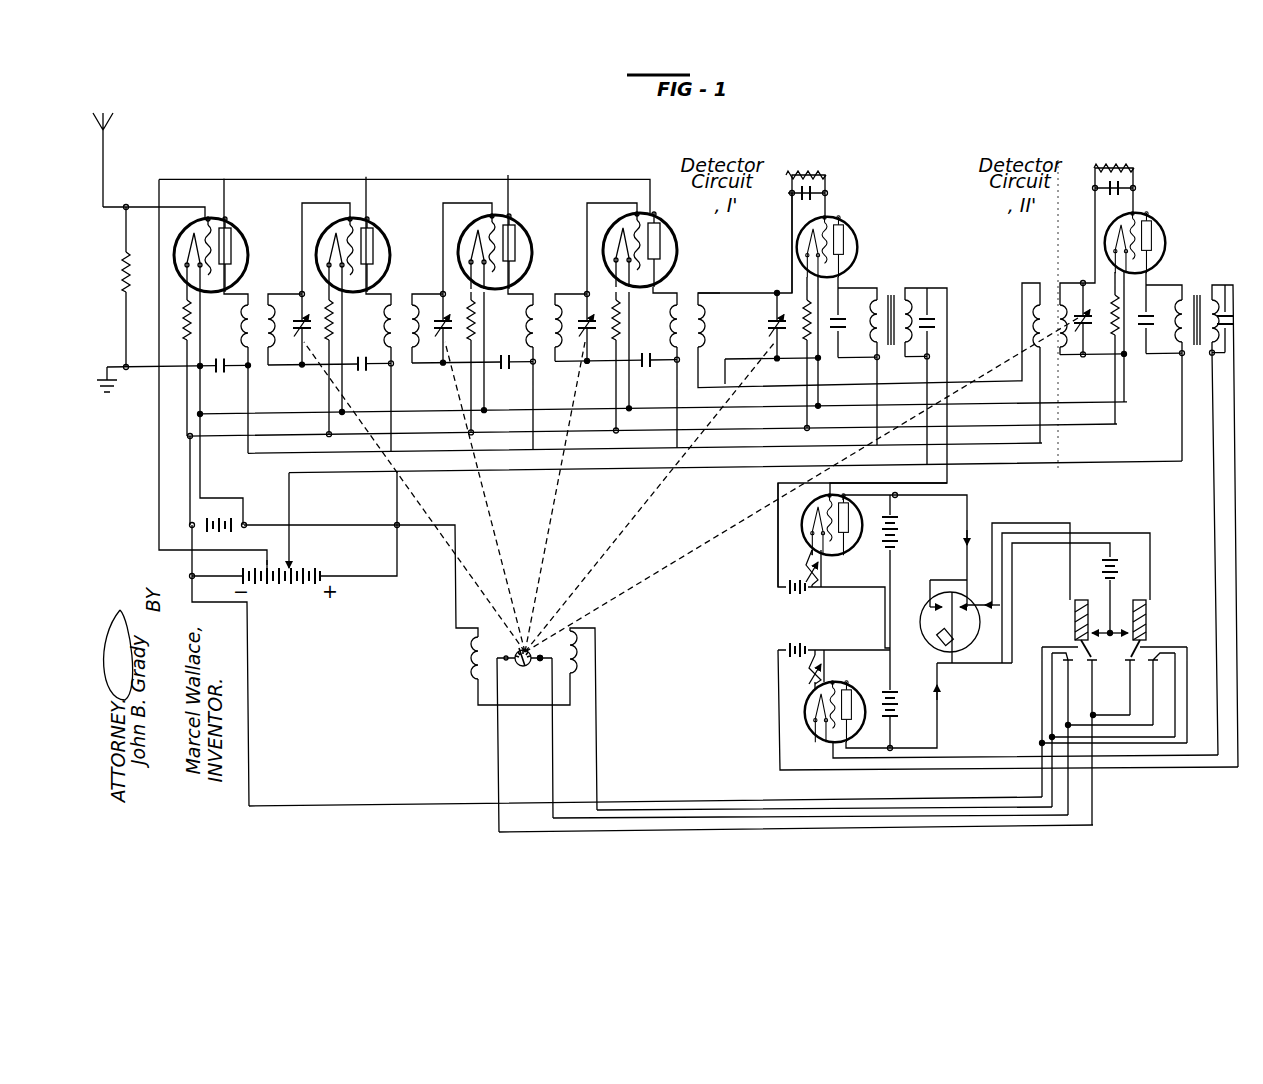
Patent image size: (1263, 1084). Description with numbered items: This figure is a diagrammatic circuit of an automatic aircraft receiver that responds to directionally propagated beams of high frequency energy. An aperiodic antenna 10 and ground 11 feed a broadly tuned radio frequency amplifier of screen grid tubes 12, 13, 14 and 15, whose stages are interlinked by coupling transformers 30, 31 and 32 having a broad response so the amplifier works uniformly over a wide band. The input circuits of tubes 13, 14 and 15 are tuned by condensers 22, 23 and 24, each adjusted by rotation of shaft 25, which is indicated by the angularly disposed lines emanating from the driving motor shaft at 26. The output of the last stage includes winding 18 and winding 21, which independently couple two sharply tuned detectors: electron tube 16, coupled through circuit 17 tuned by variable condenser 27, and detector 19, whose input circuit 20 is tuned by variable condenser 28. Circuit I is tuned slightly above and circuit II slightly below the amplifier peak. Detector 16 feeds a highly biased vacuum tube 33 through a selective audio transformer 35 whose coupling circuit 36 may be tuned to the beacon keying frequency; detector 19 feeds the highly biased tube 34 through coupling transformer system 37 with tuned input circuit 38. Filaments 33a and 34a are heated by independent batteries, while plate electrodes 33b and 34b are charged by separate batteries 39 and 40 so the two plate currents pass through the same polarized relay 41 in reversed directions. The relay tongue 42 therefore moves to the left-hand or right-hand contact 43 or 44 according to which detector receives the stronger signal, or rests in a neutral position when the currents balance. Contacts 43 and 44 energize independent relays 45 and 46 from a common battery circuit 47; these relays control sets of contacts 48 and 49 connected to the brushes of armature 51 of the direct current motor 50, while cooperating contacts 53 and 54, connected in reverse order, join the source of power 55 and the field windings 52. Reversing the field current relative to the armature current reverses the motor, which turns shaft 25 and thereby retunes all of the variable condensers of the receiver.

The antenna 10 is at (110, 134).
The ground 11 is at (115, 380).
The screen grid tube 12 is at (235, 232).
The screen grid tube 13 is at (376, 230).
The screen grid tube 14 is at (518, 228).
The screen grid tube 15 is at (660, 225).
The electron tube 16 is at (855, 220).
The circuit 17 is at (706, 292).
The output circuit 18 is at (666, 332).
The detector 19 is at (1160, 222).
The input circuit 20 is at (1064, 300).
The winding 21 is at (1032, 324).
The condenser 22 is at (300, 345).
The condenser 23 is at (441, 347).
The condenser 24 is at (583, 345).
The shaft 25 is at (535, 577).
The shaft of the driving motor 26 is at (525, 668).
The variable condenser 27 is at (767, 330).
The variable condenser 28 is at (1088, 340).
The coupling transformer 30 is at (255, 302).
The coupling transformer 31 is at (398, 302).
The coupling transformer 32 is at (540, 302).
The highly biased vacuum tube 33 is at (800, 540).
The filament 33a is at (810, 520).
The plate electrode 33b is at (848, 545).
The highly biased vacuum tube 34 is at (805, 730).
The filament 34a is at (808, 712).
The plate electrode 34b is at (852, 705).
The transformer 35 is at (892, 290).
The coupling circuit 36 is at (922, 302).
The coupling transformer system 37 is at (1196, 292).
The tuned input circuit 38 is at (1184, 345).
The battery 39 is at (910, 535).
The battery 40 is at (905, 705).
The polarized relay 41 is at (910, 608).
The relay tongue 42 is at (940, 625).
The contact 43 is at (925, 598).
The contact 44 is at (1005, 605).
The relay 45 is at (1072, 628).
The relay 46 is at (1152, 622).
The common battery circuit 47 is at (1122, 568).
The set of contacts 48 is at (1090, 670).
The set of contacts 49 is at (1132, 672).
The direct current motor 50 is at (468, 663).
The armature 51 is at (545, 660).
The field windings 52 is at (478, 680).
The cooperating contacts 53 is at (1080, 652).
The cooperating contacts 54 is at (1142, 650).
The source of power 55 is at (205, 562).